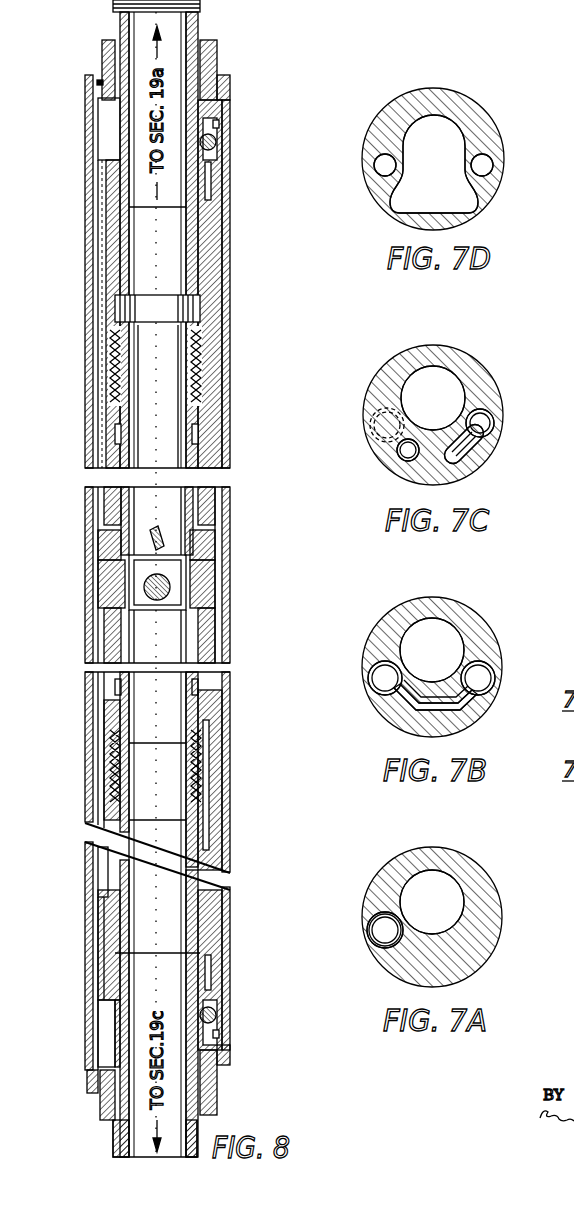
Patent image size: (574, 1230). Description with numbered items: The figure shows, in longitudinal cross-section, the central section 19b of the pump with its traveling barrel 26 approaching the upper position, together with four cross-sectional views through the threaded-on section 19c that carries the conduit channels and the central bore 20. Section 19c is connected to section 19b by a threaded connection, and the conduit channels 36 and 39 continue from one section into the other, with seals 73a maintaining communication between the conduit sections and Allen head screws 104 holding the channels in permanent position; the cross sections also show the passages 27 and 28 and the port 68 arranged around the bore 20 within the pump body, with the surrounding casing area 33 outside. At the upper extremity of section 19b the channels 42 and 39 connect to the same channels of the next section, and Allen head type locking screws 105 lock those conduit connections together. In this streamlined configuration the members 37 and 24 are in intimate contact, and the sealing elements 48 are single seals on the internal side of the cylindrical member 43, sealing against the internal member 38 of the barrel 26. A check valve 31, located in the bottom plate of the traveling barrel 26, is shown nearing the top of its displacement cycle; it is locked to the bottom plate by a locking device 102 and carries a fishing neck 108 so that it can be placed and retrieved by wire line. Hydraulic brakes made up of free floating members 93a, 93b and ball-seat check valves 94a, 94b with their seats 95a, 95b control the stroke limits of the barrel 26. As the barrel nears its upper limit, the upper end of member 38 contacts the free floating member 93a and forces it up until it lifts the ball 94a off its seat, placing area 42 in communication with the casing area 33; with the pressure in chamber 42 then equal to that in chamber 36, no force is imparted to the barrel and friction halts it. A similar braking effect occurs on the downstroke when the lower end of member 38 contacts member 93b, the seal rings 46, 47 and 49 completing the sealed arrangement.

In FIG. 8, the section 19b is at (262, 58).
In FIG. 7D, the section 19c is at (382, 96).
In FIG. 7C, the section 19c is at (371, 361).
In FIG. 7B, the section 19c is at (364, 629).
In FIG. 7A, the section 19c is at (367, 874).
In FIG. 7D, the central bore 20 is at (448, 196).
In FIG. 7C, the central bore 20 is at (448, 411).
In FIG. 7B, the central bore 20 is at (448, 651).
In FIG. 7A, the central bore 20 is at (448, 903).
In FIG. 8, the member 24 is at (86, 455).
In FIG. 8, the traveling barrel 26 is at (170, 258).
In FIG. 7C, the valve 27 is at (371, 428).
In FIG. 7B, the valve 27 is at (372, 681).
In FIG. 7A, the valve 27 is at (374, 924).
In FIG. 7C, the valve 28 is at (486, 425).
In FIG. 7B, the valve 28 is at (490, 682).
In FIG. 8, the check valve 31 is at (162, 568).
In FIG. 8, the casing area 33 is at (61, 232).
In FIG. 7D, the casing area 33 is at (545, 108).
In FIG. 7C, the casing area 33 is at (542, 368).
In FIG. 7B, the casing area 33 is at (542, 626).
In FIG. 7A, the casing area 33 is at (539, 871).
In FIG. 8, the conduit channel 36 is at (214, 718).
In FIG. 7D, the conduit channel 36 is at (374, 164).
In FIG. 7C, the conduit channel 36 is at (404, 460).
In FIG. 7B, the conduit channel 36 is at (398, 712).
In FIG. 8, the member 37 is at (92, 711).
In FIG. 8, the exterior member of barrel 38 is at (192, 434).
In FIG. 8, the conduit channel 39 is at (205, 42).
In FIG. 7D, the conduit channel 39 is at (493, 164).
In FIG. 7C, the conduit channel 39 is at (470, 465).
In FIG. 8, the area 42 is at (100, 117).
In FIG. 8, the cylindrical member 43 is at (197, 309).
In FIG. 8, the seal 46 is at (104, 613).
In FIG. 8, the seal retainer 47 is at (102, 592).
In FIG. 8, the sealing elements 48 is at (192, 372).
In FIG. 8, the seal 49 is at (105, 550).
In FIG. 7A, the port 68 is at (372, 940).
In FIG. 8, the seals 73a is at (212, 1094).
In FIG. 8, the free floating member 93a is at (211, 190).
In FIG. 8, the free floating member 93b is at (211, 981).
In FIG. 8, the ball 94a is at (216, 145).
In FIG. 8, the ball-seat check valve 94b is at (205, 1014).
In FIG. 8, the ball seat 95a is at (219, 123).
In FIG. 8, the ball seat 95b is at (219, 1035).
In FIG. 8, the locking device 102 is at (129, 575).
In FIG. 8, the Allen head screws 104 is at (100, 1083).
In FIG. 8, the locking screws 105 is at (98, 82).
In FIG. 8, the fishing neck 108 is at (156, 532).